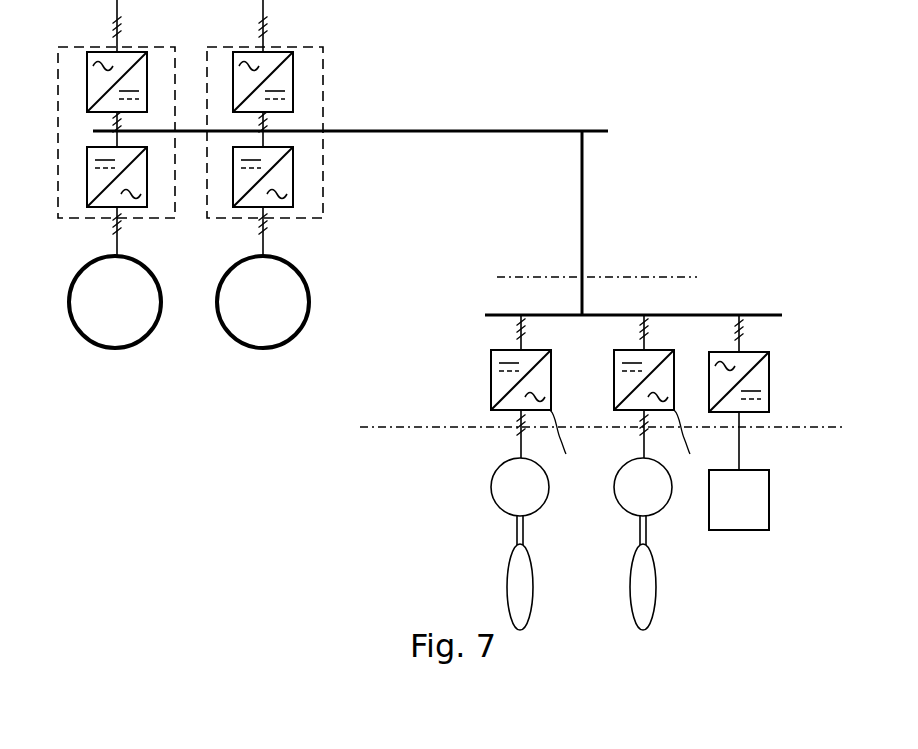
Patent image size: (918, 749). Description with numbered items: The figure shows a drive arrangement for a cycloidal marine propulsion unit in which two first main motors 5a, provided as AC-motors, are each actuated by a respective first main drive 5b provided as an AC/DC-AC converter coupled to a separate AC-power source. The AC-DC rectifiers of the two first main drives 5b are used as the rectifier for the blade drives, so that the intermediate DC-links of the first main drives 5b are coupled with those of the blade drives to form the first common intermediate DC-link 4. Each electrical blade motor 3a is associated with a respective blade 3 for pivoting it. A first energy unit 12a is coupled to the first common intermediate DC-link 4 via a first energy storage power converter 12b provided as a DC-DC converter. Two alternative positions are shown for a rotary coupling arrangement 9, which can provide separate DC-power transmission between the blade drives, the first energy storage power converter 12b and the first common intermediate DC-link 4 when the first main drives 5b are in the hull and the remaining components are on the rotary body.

The blade 3 is at (533, 583).
The electrical blade motor 3a is at (582, 415).
The first common intermediate DC-link 4 is at (582, 183).
The first main motor 5a is at (189, 302).
The first main drive 5b is at (58, 218).
The rotary coupling arrangement 9 is at (617, 277).
The first energy unit 12a is at (768, 530).
The first energy storage power converter 12b is at (768, 412).